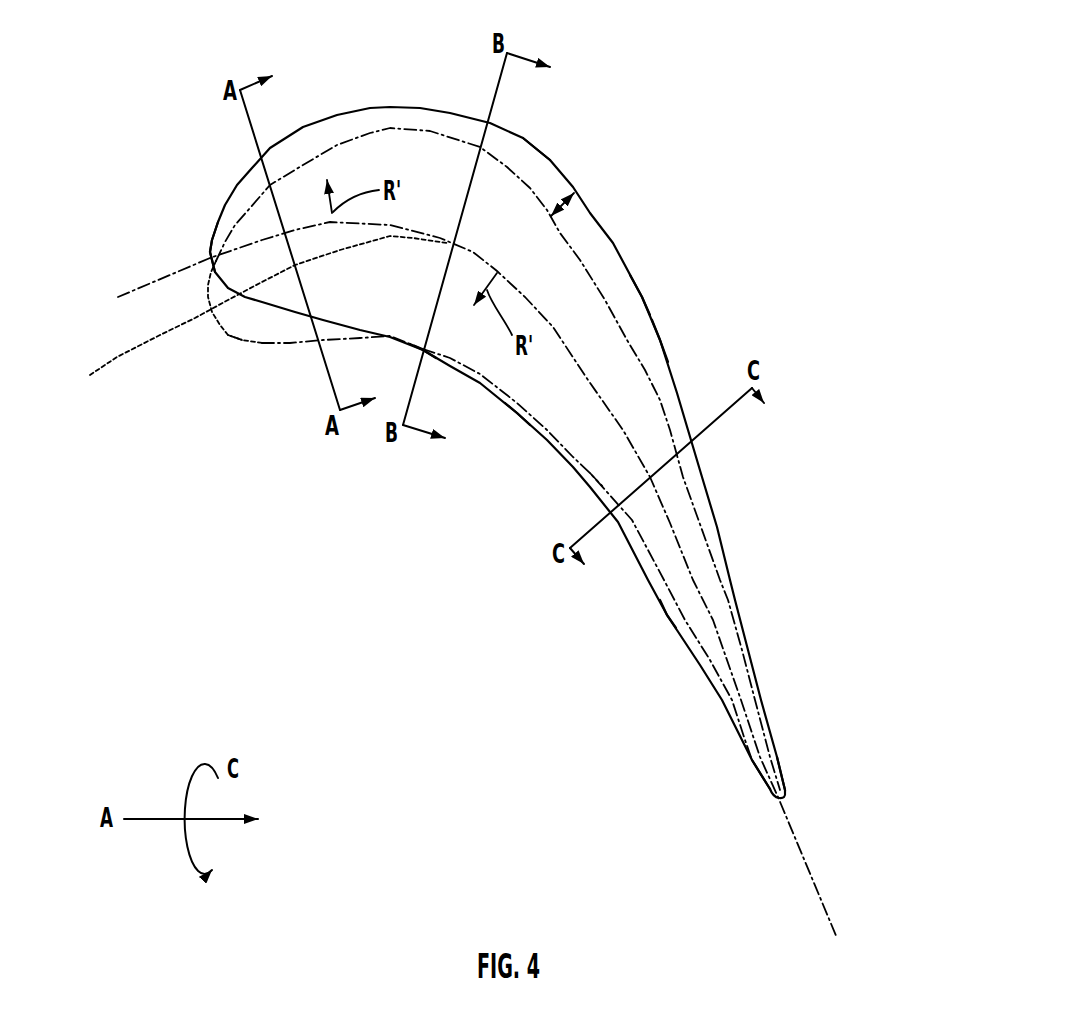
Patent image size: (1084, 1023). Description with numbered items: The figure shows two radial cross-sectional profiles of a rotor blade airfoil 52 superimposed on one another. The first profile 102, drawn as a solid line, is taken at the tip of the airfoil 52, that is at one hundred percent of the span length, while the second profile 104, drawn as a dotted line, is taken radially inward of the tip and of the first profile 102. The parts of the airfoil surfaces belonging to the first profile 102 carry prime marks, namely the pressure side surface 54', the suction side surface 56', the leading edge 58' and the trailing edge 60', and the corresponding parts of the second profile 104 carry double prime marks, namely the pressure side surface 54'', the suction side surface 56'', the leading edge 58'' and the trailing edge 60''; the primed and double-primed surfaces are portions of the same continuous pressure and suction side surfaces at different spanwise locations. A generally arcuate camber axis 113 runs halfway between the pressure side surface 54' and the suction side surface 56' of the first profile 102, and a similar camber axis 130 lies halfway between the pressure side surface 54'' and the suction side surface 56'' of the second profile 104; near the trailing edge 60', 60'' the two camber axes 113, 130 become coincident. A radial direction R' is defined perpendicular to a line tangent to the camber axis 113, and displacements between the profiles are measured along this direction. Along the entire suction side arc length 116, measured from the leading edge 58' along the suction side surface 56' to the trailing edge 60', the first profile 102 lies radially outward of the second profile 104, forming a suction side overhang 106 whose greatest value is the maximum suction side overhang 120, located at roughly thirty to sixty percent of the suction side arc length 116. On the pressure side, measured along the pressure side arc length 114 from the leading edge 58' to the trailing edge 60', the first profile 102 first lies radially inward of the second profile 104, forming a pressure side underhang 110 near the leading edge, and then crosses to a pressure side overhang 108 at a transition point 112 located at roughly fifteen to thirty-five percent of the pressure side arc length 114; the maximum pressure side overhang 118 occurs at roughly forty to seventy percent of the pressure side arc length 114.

The airfoil 52 is at (498, 482).
The pressure side surface 54' is at (490, 520).
The pressure side surface 54'' is at (587, 554).
The suction side surface 56' is at (497, 408).
The suction side surface 56'' is at (498, 459).
The leading edge 58' is at (165, 242).
The leading edge 58'' is at (195, 331).
The trailing edge 60' is at (853, 787).
The trailing edge 60'' is at (768, 773).
The first profile 102 is at (662, 340).
The second profile 104 is at (290, 345).
The suction side overhang 106 is at (541, 178).
The pressure side overhang 108 is at (671, 615).
The pressure side underhang 110 is at (249, 331).
The transition point 112 is at (423, 351).
The camber axis 113 is at (672, 527).
The pressure side arc length 114 is at (515, 416).
The suction side arc length 116 is at (644, 297).
The maximum pressure side overhang 118 is at (606, 481).
The maximum suction side overhang 120 is at (566, 207).
The camber axis 130 is at (103, 367).